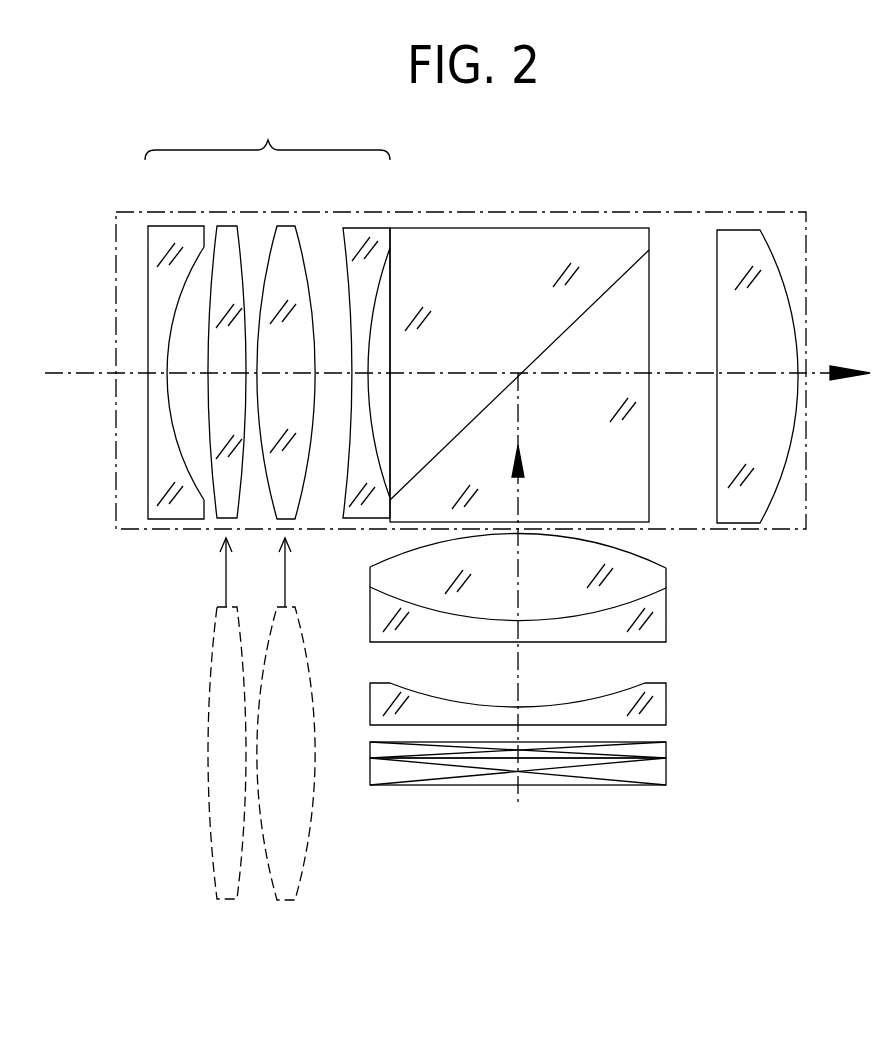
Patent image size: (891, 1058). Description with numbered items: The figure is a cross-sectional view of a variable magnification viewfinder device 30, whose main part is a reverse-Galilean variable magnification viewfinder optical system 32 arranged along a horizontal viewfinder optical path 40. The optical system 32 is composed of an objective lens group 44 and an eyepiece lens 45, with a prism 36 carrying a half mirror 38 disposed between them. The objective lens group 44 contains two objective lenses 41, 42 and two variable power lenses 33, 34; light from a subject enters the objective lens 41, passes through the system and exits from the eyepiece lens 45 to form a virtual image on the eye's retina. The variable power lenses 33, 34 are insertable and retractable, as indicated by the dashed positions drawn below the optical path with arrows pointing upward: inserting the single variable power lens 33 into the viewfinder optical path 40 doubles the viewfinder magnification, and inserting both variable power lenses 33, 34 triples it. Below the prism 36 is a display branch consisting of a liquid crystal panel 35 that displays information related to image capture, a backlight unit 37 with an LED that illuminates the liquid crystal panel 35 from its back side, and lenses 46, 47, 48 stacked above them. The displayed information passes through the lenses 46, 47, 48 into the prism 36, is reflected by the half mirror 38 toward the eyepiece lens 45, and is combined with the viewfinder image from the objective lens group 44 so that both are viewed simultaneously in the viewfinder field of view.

The variable magnification viewfinder device 30 is at (800, 710).
The variable magnification viewfinder optical system 32 is at (115, 303).
The variable power lens 33 is at (233, 232).
The variable power lens 34 is at (285, 232).
The liquid crystal panel 35 is at (370, 746).
The prism 36 is at (462, 247).
The backlight unit 37 is at (666, 770).
The half mirror 38 is at (631, 264).
The viewfinder optical path 40 is at (62, 374).
The objective lens 41 is at (167, 233).
The objective lens 42 is at (370, 233).
The objective lens group 44 is at (267, 135).
The eyepiece lens 45 is at (737, 247).
The lens 46 is at (666, 702).
The lens 47 is at (666, 612).
The lens 48 is at (666, 572).